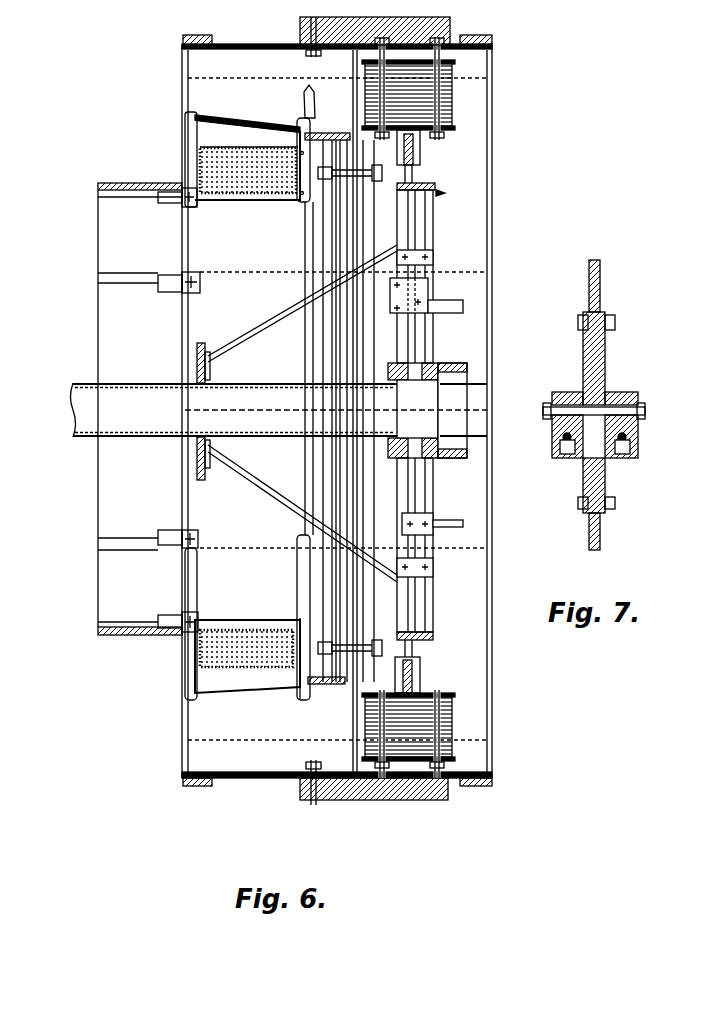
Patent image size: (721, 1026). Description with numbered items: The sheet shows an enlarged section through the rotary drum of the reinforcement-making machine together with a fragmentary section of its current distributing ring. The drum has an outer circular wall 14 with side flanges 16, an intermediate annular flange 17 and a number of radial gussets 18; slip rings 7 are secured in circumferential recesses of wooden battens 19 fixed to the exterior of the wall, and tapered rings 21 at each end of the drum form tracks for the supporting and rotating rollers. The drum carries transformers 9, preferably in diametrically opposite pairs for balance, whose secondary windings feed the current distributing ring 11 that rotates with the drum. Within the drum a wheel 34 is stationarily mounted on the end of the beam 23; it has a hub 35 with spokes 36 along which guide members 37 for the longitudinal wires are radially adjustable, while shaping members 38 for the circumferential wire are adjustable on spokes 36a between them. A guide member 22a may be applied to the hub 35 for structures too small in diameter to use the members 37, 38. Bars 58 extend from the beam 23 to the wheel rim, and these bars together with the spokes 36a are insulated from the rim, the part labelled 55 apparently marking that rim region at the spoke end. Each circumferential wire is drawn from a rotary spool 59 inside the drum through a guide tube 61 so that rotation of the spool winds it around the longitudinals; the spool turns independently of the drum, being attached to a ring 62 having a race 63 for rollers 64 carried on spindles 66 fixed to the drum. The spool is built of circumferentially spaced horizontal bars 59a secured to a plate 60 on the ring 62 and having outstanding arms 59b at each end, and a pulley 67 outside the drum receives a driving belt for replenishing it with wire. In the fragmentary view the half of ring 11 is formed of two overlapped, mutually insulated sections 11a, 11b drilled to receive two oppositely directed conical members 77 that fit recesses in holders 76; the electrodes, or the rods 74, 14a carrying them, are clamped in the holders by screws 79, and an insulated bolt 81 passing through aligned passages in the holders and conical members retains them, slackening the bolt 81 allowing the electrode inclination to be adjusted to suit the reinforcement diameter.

In FIG. 6, the slip rings 7 is at (327, 798).
In FIG. 6, the transformers 9 is at (452, 72).
In FIG. 6, the current distributing ring 11 is at (420, 153).
In FIG. 7, the ring section 11a is at (595, 263).
In FIG. 7, the ring section 11b is at (600, 540).
In FIG. 6, the outer circular wall 14 is at (252, 45).
In FIG. 7, the casing 14a is at (552, 443).
In FIG. 6, the side flanges 16 is at (182, 70).
In FIG. 6, the intermediate annular flange 17 is at (353, 100).
In FIG. 6, the radial gussets 18 is at (195, 95).
In FIG. 6, the wooden battens 19 is at (450, 41).
In FIG. 6, the tapered rings 21 is at (190, 35).
In FIG. 6, the guide member 22a is at (460, 383).
In FIG. 6, the beam 23 is at (75, 382).
In FIG. 6, the wheel 34 is at (441, 193).
In FIG. 6, the hub 35 is at (404, 434).
In FIG. 6, the spokes 36 is at (434, 225).
In FIG. 6, the spokes 36a is at (430, 498).
In FIG. 6, the guide members 37 is at (402, 307).
In FIG. 6, the shaping members 38 is at (420, 520).
In FIG. 6, the cap 55 is at (430, 637).
In FIG. 6, the bars 58 is at (250, 477).
In FIG. 6, the rotary spool 59 is at (210, 420).
In FIG. 6, the horizontal bars 59a is at (253, 200).
In FIG. 6, the outstanding arms 59b is at (186, 240).
In FIG. 6, the plate 60 is at (302, 617).
In FIG. 6, the guide tube 61 is at (297, 98).
In FIG. 6, the ring 62 is at (303, 133).
In FIG. 6, the race 63 is at (335, 238).
In FIG. 6, the rollers 64 is at (328, 182).
In FIG. 6, the spindles 66 is at (419, 180).
In FIG. 6, the pulley 67 is at (115, 635).
In FIG. 7, the rods 74 is at (628, 440).
In FIG. 7, the holders 76 is at (628, 391).
In FIG. 7, the conical members 77 is at (570, 395).
In FIG. 7, the screws 79 is at (554, 456).
In FIG. 7, the bolt 81 is at (645, 411).